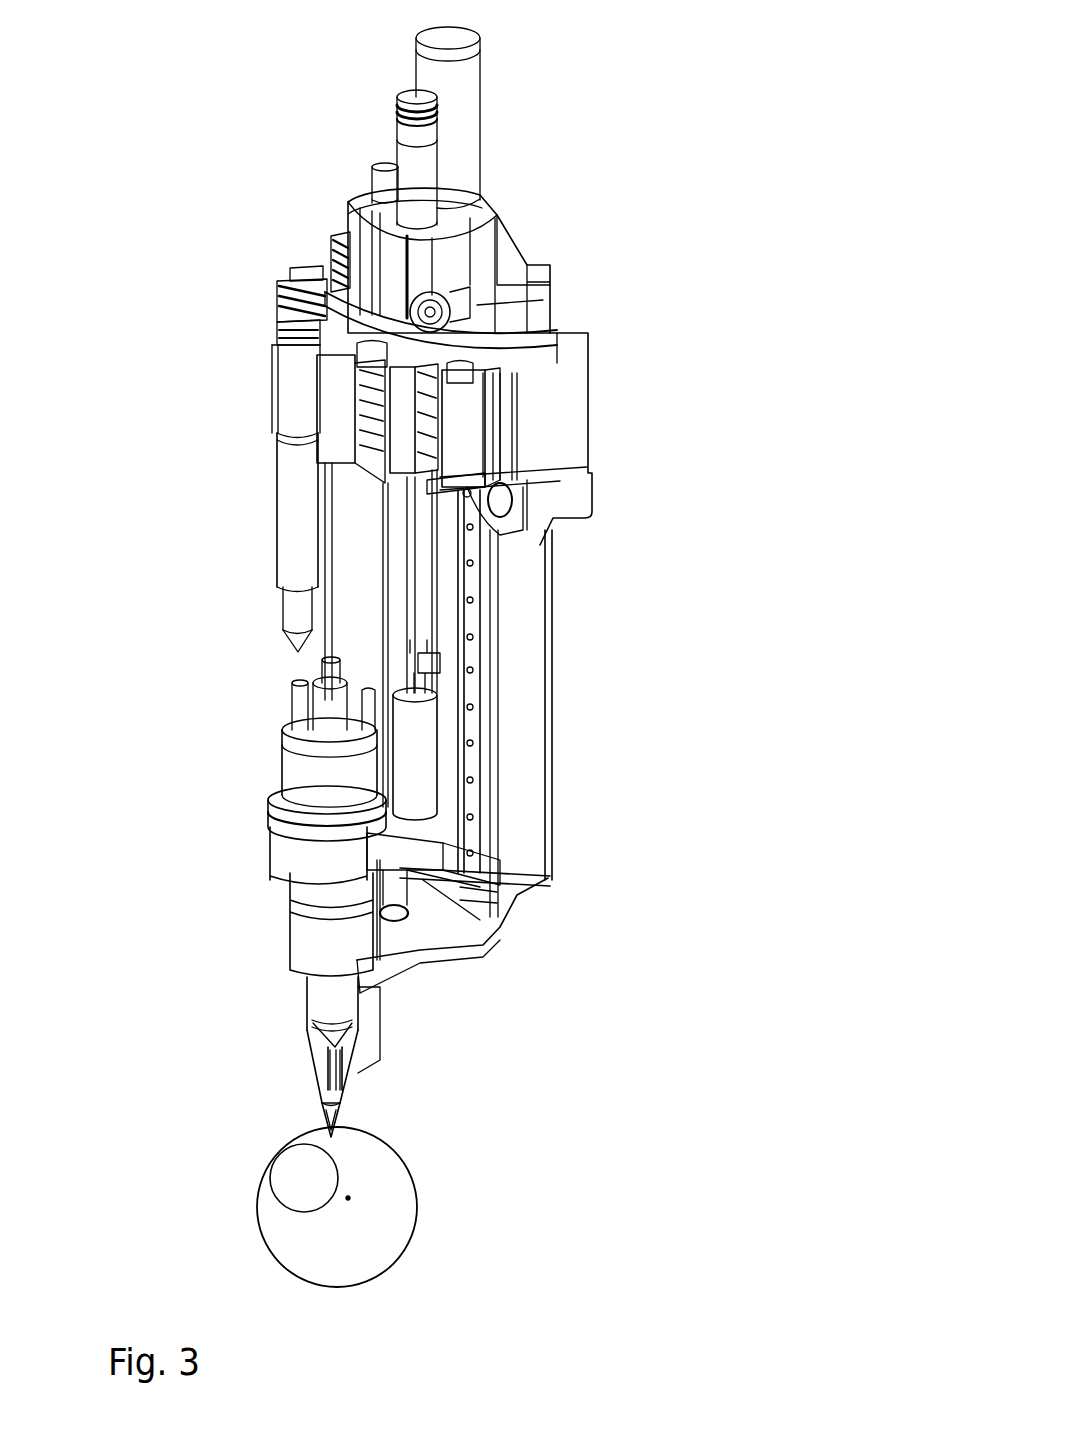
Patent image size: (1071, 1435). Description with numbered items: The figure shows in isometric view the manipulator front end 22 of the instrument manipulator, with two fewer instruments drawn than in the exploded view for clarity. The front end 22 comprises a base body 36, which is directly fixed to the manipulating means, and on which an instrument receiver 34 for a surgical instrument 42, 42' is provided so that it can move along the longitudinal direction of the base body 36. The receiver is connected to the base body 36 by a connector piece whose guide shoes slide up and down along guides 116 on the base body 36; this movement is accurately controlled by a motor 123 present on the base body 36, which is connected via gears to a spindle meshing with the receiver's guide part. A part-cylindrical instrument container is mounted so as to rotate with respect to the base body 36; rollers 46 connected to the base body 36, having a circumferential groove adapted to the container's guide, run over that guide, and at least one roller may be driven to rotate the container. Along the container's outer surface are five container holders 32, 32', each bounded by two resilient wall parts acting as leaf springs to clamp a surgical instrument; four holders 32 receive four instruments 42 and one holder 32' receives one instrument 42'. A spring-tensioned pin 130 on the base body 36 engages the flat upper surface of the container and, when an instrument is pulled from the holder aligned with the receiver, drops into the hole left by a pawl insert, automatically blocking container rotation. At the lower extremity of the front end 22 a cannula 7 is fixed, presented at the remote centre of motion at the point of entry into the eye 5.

The manipulator front end 22 is at (752, 130).
The motor 123 is at (467, 100).
The rollers 46 is at (343, 233).
The spring-tensioned pin 130 is at (297, 273).
The container holder 32' is at (215, 349).
The container holders 32 is at (511, 418).
The surgical instruments 42 is at (228, 542).
The guides 116 is at (483, 615).
The base body 36 is at (533, 710).
The surgical instrument 42' is at (257, 730).
The instrument receiver 34 is at (178, 878).
The cannula 7 is at (420, 1122).
The eye 5 is at (392, 1178).